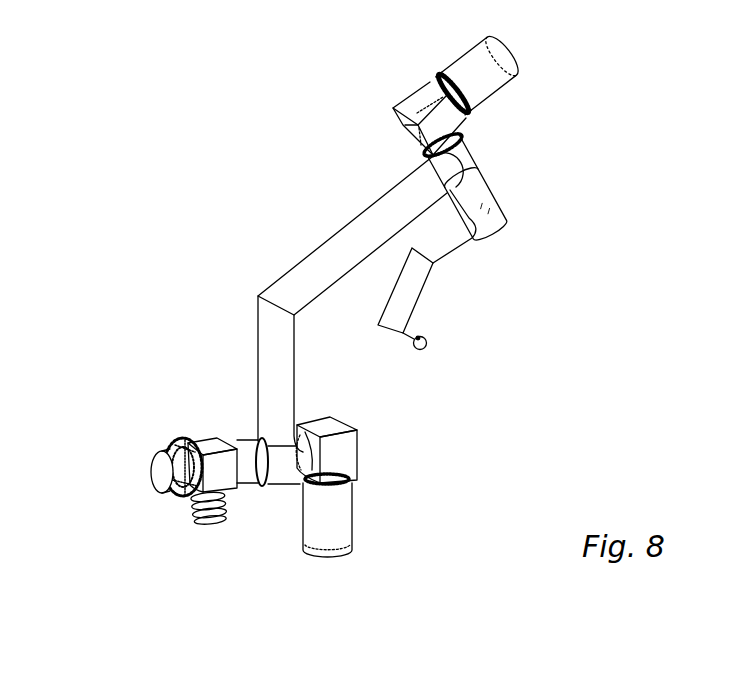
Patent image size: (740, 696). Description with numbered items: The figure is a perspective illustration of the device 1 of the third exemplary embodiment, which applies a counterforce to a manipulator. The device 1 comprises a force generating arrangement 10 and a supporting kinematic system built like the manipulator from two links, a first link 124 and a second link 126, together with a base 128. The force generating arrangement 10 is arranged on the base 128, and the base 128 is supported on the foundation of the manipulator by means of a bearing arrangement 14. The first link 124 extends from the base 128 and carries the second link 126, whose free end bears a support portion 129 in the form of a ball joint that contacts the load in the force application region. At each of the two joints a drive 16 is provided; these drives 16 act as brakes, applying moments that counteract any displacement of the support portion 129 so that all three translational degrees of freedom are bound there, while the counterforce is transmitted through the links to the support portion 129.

The device 1 is at (76, 194).
The force generating arrangement 10 is at (204, 518).
The bearing arrangement 14 is at (116, 482).
The drive 16 is at (460, 63).
The first link 124 is at (307, 275).
The second link 126 is at (438, 255).
The base 128 is at (203, 447).
The support portion 129 is at (427, 343).